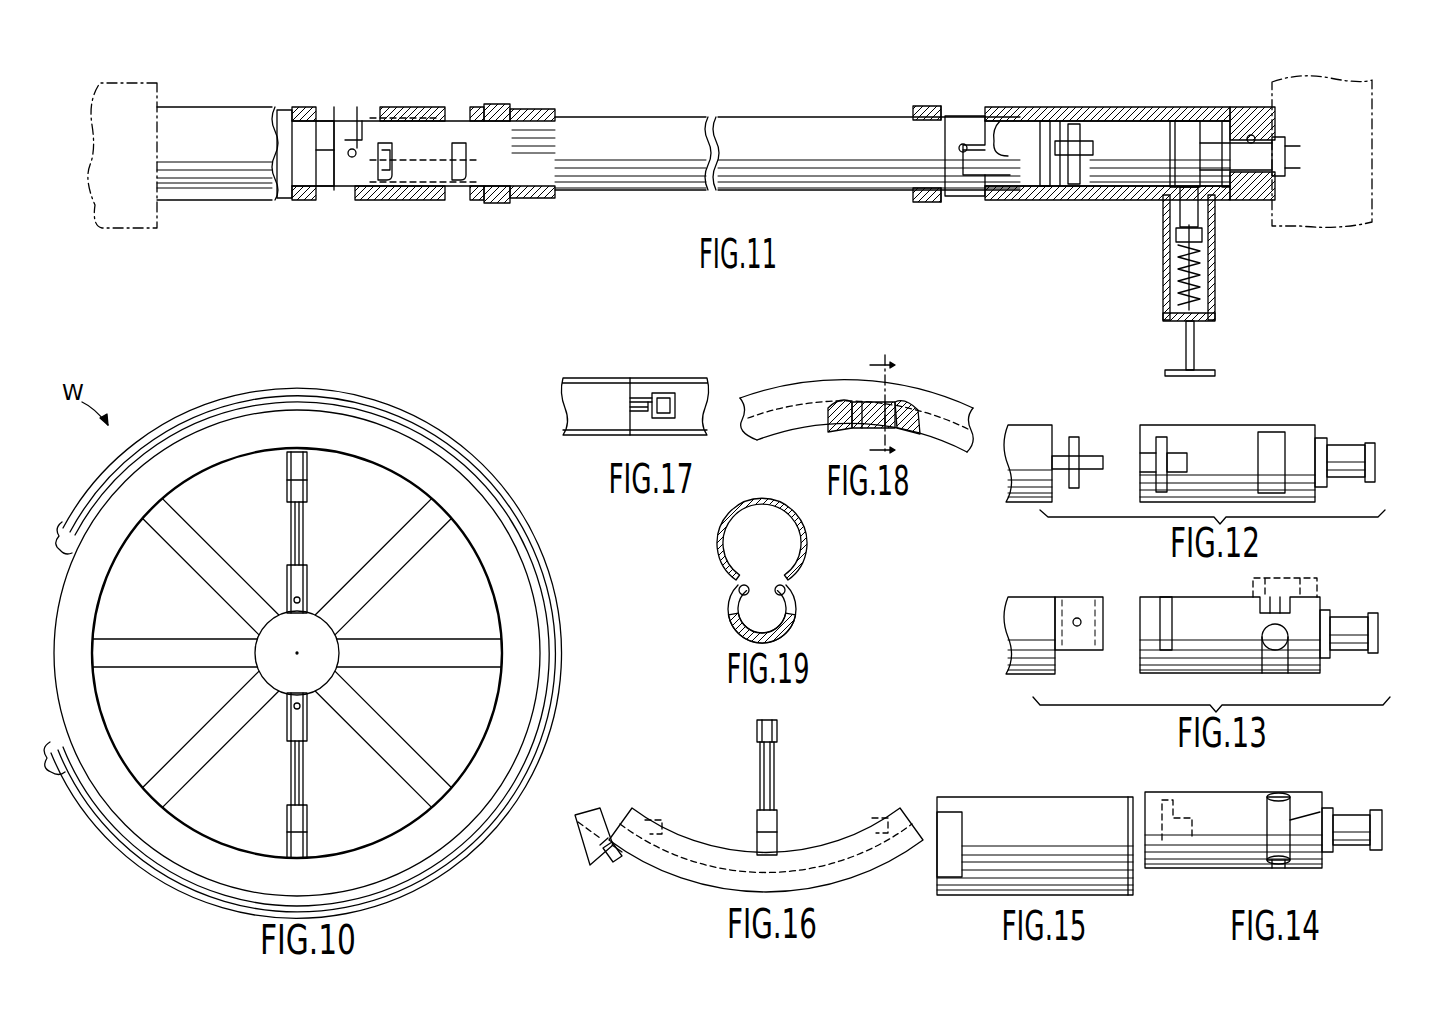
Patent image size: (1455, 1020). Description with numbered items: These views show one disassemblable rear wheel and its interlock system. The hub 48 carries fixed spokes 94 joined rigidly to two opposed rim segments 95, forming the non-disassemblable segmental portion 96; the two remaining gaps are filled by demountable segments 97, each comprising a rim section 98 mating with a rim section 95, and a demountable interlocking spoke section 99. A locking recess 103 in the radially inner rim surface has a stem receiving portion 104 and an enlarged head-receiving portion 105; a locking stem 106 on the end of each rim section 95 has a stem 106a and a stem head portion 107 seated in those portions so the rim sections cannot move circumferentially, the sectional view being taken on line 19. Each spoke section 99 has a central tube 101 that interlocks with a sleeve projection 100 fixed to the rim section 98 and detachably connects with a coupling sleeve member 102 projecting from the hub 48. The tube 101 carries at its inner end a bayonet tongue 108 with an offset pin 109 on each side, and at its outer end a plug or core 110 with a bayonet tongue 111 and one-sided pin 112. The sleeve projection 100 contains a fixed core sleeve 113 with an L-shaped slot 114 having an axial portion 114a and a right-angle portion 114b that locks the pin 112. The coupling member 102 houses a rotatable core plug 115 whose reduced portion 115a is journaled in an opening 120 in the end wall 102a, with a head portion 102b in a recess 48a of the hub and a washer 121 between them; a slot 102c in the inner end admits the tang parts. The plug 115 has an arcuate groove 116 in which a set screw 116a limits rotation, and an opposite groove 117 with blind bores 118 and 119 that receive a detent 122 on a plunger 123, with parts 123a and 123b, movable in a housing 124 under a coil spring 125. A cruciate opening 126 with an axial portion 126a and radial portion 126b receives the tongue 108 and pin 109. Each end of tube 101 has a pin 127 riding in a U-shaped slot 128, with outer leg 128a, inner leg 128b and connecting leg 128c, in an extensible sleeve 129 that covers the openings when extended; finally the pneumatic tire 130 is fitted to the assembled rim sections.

In FIG. 18, the section line 19 is at (869, 406).
In FIG. 11, the hub 48 is at (1318, 82).
In FIG. 10, the hub 48 is at (335, 648).
In FIG. 11, the recess 48a is at (1288, 158).
In FIG. 10, the fixed spokes 94 is at (216, 712).
In FIG. 10, the rim segments 95 is at (112, 580).
In FIG. 17, the rim segments 95 is at (592, 380).
In FIG. 18, the rim segments 95 is at (795, 396).
In FIG. 16, the rim segments 95 is at (582, 855).
In FIG. 10, the non-disassemblable segmental portion 96 is at (392, 490).
In FIG. 16, the non-disassemblable segmental portion 96 is at (578, 870).
In FIG. 16, the demountable segments 97 is at (808, 838).
In FIG. 11, the rim section 98 is at (145, 95).
In FIG. 17, the rim section 98 is at (668, 430).
In FIG. 18, the rim section 98 is at (915, 400).
In FIG. 19, the rim section 98 is at (798, 606).
In FIG. 16, the rim section 98 is at (858, 873).
In FIG. 11, the demountable interlocking spoke section 99 is at (778, 112).
In FIG. 10, the demountable interlocking spoke section 99 is at (283, 795).
In FIG. 12, the demountable interlocking spoke section 99 is at (1023, 424).
In FIG. 13, the demountable interlocking spoke section 99 is at (1015, 597).
In FIG. 16, the demountable interlocking spoke section 99 is at (752, 792).
In FIG. 11, the sleeve projection 100 is at (226, 120).
In FIG. 10, the sleeve projection 100 is at (312, 835).
In FIG. 16, the sleeve projection 100 is at (757, 845).
In FIG. 11, the central tube 101 is at (662, 124).
In FIG. 10, the coupling sleeve member 102 is at (285, 712).
In FIG. 12, the coupling sleeve member 102 is at (1227, 463).
In FIG. 13, the coupling sleeve member 102 is at (1236, 597).
In FIG. 15, the coupling sleeve member 102 is at (1045, 810).
In FIG. 11, the end wall 102a is at (1250, 202).
In FIG. 11, the head portion 102b is at (1286, 142).
In FIG. 12, the head portion 102b is at (1376, 463).
In FIG. 13, the head portion 102b is at (1380, 620).
In FIG. 14, the head portion 102b is at (1384, 824).
In FIG. 11, the slot 102c is at (1086, 108).
In FIG. 15, the slot 102c is at (964, 812).
In FIG. 17, the locking recess 103 is at (648, 393).
In FIG. 18, the locking recess 103 is at (873, 415).
In FIG. 16, the locking recess 103 is at (655, 820).
In FIG. 17, the stem receiving portion 104 is at (640, 412).
In FIG. 17, the head-receiving portion 105 is at (665, 398).
In FIG. 18, the head-receiving portion 105 is at (842, 402).
In FIG. 19, the head-receiving portion 105 is at (792, 630).
In FIG. 16, the locking stem 106 is at (620, 880).
In FIG. 16, the stem 106a is at (604, 842).
In FIG. 16, the stem head portion 107 is at (630, 858).
In FIG. 11, the bayonet tongue 108 is at (1082, 160).
In FIG. 12, the bayonet tongue 108 is at (1092, 456).
In FIG. 13, the bayonet tongue 108 is at (1090, 606).
In FIG. 11, the offset pin 109 is at (1070, 186).
In FIG. 12, the offset pin 109 is at (1066, 437).
In FIG. 13, the offset pin 109 is at (1078, 627).
In FIG. 11, the plug or core 110 is at (508, 128).
In FIG. 11, the bayonet tongue 111 is at (336, 110).
In FIG. 11, the pin 112 is at (356, 148).
In FIG. 11, the core sleeve 113 is at (322, 123).
In FIG. 11, the L-shaped slot 114 is at (325, 160).
In FIG. 11, the axial portion 114a is at (330, 170).
In FIG. 11, the right-angle portion 114b is at (292, 196).
In FIG. 11, the core plug 115 is at (1150, 176).
In FIG. 13, the core plug 115 is at (1190, 660).
In FIG. 14, the core plug 115 is at (1218, 858).
In FIG. 11, the reduced portion 115a is at (1270, 182).
In FIG. 12, the reduced portion 115a is at (1350, 446).
In FIG. 13, the reduced portion 115a is at (1350, 652).
In FIG. 14, the reduced portion 115a is at (1352, 846).
In FIG. 11, the arcuate groove 116 is at (1170, 145).
In FIG. 12, the arcuate groove 116 is at (1275, 432).
In FIG. 13, the arcuate groove 116 is at (1292, 605).
In FIG. 13, the set screw 116a is at (1296, 595).
In FIG. 13, the arcuate groove 117 is at (1278, 660).
In FIG. 14, the arcuate groove 117 is at (1325, 812).
In FIG. 13, the blind bore 118 is at (1266, 645).
In FIG. 14, the blind bore 118 is at (1285, 797).
In FIG. 14, the blind bore 119 is at (1285, 863).
In FIG. 11, the opening 120 is at (1256, 136).
In FIG. 11, the washer 121 is at (1226, 190).
In FIG. 12, the washer 121 is at (1320, 438).
In FIG. 13, the washer 121 is at (1325, 634).
In FIG. 11, the detent 122 is at (1172, 210).
In FIG. 11, the plunger 123 is at (1196, 340).
In FIG. 11, the rod piston 123a is at (1215, 238).
In FIG. 11, the rod end plate 123b is at (1170, 316).
In FIG. 11, the housing 124 is at (1215, 272).
In FIG. 11, the coil spring 125 is at (1170, 285).
In FIG. 11, the cruciate opening 126 is at (955, 185).
In FIG. 12, the cruciate opening 126 is at (1176, 442).
In FIG. 11, the axial portion 126a is at (998, 122).
In FIG. 12, the axial portion 126a is at (1180, 472).
In FIG. 12, the radial portion 126b is at (1150, 480).
In FIG. 11, the radially projecting pin 127 is at (457, 182).
In FIG. 11, the U-shaped slot 128 is at (378, 180).
In FIG. 11, the outer leg 128a is at (390, 180).
In FIG. 11, the inner leg 128b is at (476, 200).
In FIG. 11, the connecting leg 128c is at (425, 195).
In FIG. 11, the extensible sleeve 129 is at (500, 200).
In FIG. 10, the extensible sleeve 129 is at (312, 725).
In FIG. 16, the extensible sleeve 129 is at (780, 812).
In FIG. 10, the pneumatic tire 130 is at (432, 868).
In FIG. 19, the pneumatic tire 130 is at (806, 538).